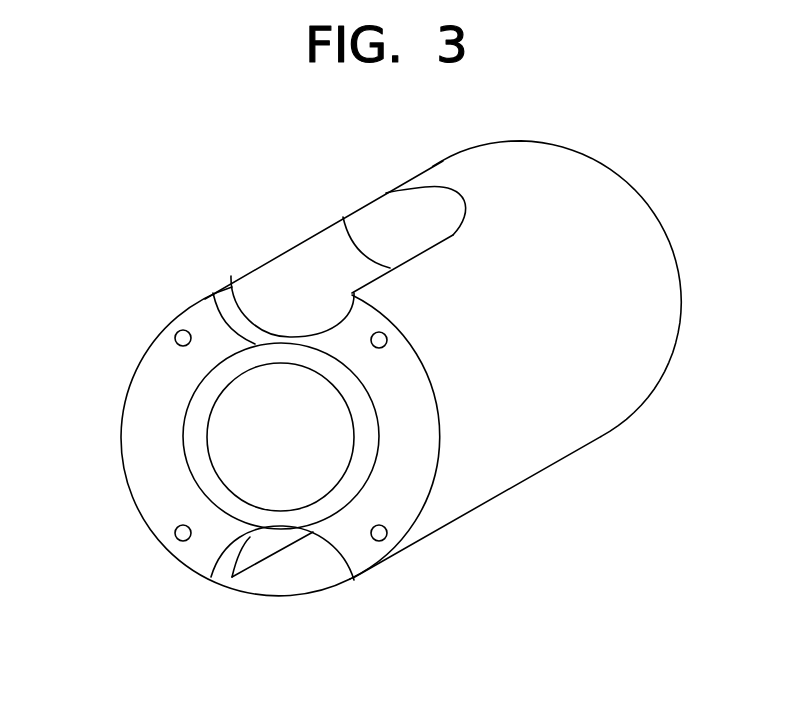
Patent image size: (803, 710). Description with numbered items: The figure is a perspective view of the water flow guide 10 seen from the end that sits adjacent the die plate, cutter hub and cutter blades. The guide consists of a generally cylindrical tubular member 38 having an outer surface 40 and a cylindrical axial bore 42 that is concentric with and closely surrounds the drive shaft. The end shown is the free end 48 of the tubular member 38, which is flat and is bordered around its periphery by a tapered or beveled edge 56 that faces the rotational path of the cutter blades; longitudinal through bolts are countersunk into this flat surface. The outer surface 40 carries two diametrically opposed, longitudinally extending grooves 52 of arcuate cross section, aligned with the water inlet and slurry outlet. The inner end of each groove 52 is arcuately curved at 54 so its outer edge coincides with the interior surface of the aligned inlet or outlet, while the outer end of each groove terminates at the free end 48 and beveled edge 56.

The coupling device 10 is at (637, 184).
The cylindrical tubular member 38 is at (143, 472).
The outer surface 40 is at (579, 413).
The cylindrical axial bore 42 is at (212, 426).
The free end 48 is at (210, 487).
The longitudinally extending grooves 52 is at (294, 256).
The arcuately curved inner end 54 is at (412, 205).
The beveled edge 56 is at (418, 490).